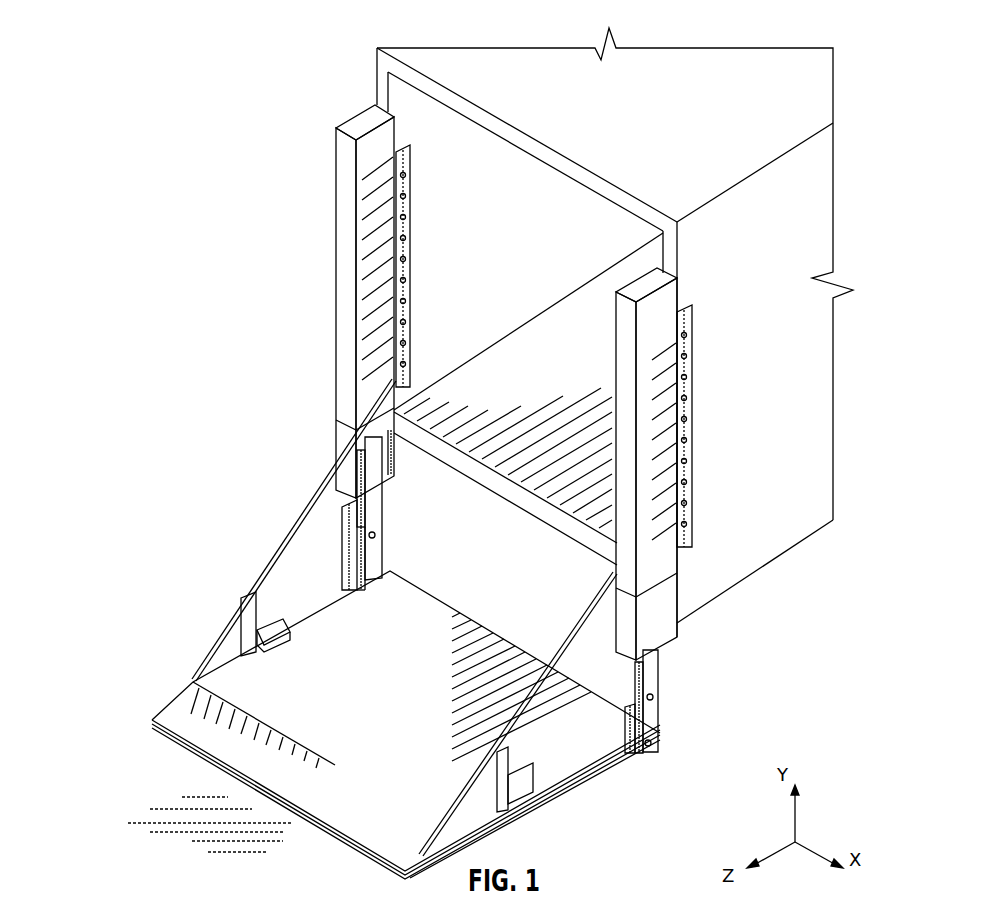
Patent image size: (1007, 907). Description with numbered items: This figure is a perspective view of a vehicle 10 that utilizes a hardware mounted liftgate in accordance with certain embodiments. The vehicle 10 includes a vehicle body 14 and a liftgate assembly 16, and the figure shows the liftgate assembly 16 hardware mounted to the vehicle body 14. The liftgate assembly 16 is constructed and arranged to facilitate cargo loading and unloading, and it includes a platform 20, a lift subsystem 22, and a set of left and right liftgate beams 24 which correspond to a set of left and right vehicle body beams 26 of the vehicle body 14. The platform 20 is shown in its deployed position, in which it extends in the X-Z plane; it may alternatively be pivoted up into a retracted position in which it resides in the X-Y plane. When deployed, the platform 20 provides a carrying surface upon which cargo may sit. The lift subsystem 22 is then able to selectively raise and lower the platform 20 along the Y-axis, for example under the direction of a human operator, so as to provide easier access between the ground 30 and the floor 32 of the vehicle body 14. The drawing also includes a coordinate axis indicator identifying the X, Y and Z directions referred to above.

The vehicle 10 is at (611, 332).
The vehicle body 14 is at (775, 396).
The liftgate assembly 16 is at (407, 492).
The platform 20 is at (382, 696).
The lift subsystem 22 is at (258, 168).
The liftgate beams 24 is at (590, 346).
The vehicle body beams 26 is at (519, 333).
The ground 30 is at (167, 807).
The floor 32 is at (554, 403).